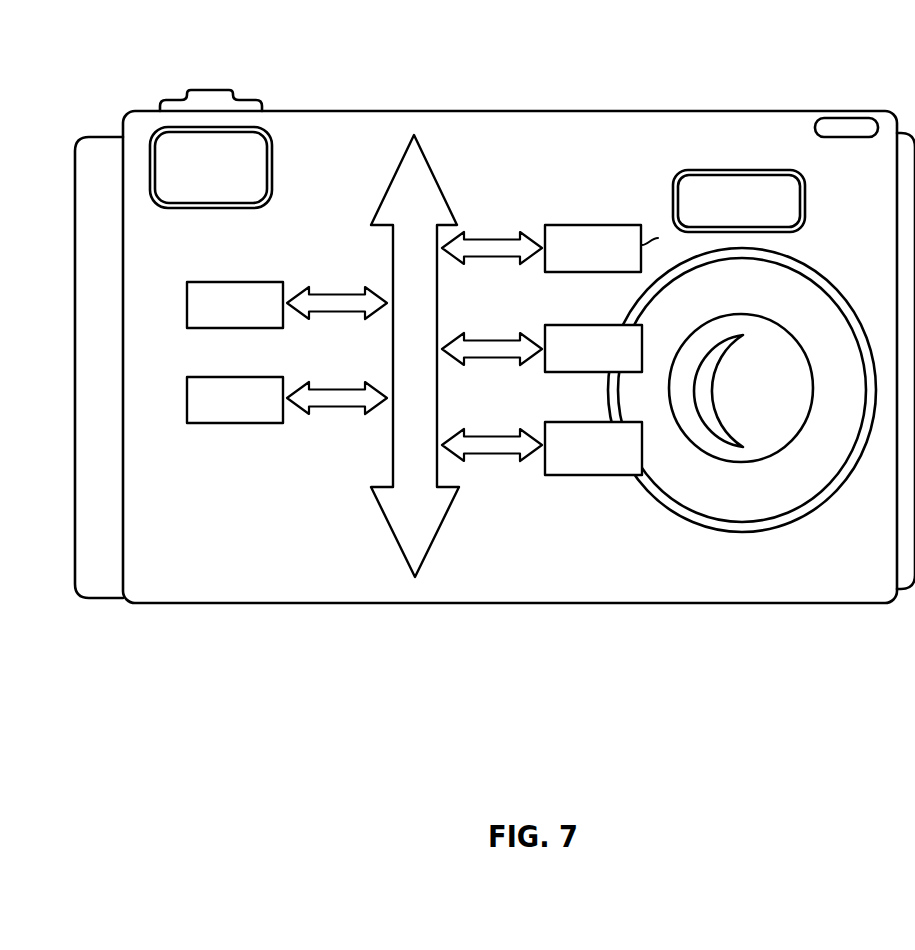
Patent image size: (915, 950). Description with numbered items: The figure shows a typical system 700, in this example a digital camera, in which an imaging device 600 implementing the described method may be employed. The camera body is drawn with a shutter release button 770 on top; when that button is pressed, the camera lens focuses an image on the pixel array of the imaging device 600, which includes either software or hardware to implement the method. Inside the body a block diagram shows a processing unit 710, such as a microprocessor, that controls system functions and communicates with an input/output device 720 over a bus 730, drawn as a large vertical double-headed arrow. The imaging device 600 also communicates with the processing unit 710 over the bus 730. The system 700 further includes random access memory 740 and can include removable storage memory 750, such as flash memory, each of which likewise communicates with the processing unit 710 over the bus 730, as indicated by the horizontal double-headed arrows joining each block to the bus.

The system 700 is at (765, 77).
The shutter release button 770 is at (203, 70).
The bus 730 is at (393, 538).
The processing unit 710 is at (187, 308).
The random access memory 740 is at (187, 405).
The imaging device 600 is at (588, 205).
The input/output device 720 is at (642, 348).
The removable storage memory 750 is at (660, 442).